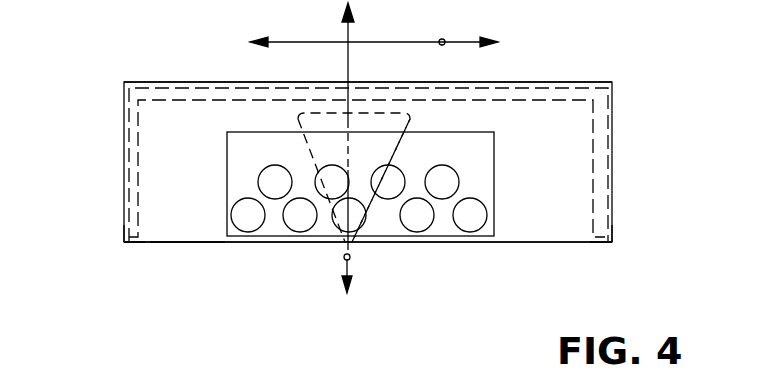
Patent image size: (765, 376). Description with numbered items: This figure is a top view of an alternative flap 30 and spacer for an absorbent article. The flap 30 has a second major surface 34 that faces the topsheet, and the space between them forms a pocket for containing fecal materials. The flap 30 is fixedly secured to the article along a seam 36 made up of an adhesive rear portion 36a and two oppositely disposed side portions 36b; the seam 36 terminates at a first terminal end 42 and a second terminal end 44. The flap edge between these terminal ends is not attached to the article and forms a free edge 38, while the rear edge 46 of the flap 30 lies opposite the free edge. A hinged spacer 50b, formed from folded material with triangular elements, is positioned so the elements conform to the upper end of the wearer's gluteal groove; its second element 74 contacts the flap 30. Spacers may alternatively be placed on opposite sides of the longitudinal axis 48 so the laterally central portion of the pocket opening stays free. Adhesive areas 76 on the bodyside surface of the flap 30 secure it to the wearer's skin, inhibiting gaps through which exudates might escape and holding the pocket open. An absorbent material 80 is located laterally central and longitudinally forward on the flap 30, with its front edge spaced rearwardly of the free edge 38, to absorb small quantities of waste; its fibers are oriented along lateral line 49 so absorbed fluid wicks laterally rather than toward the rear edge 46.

The flap 30 is at (572, 130).
The second major surface 34 is at (188, 230).
The seam 36 is at (228, 88).
The rear portion 36a is at (385, 92).
The side portions 36b is at (130, 158).
The free edge 38 is at (523, 246).
The first terminal end 42 is at (136, 242).
The second terminal end 44 is at (597, 246).
The rear edge 46 is at (518, 82).
The longitudinal axis 48 is at (352, 262).
The lateral line 49 is at (444, 40).
The spacer 50b is at (398, 150).
The second element 74 is at (323, 370).
The adhesive areas 76 is at (275, 166).
The absorbent material 80 is at (229, 180).